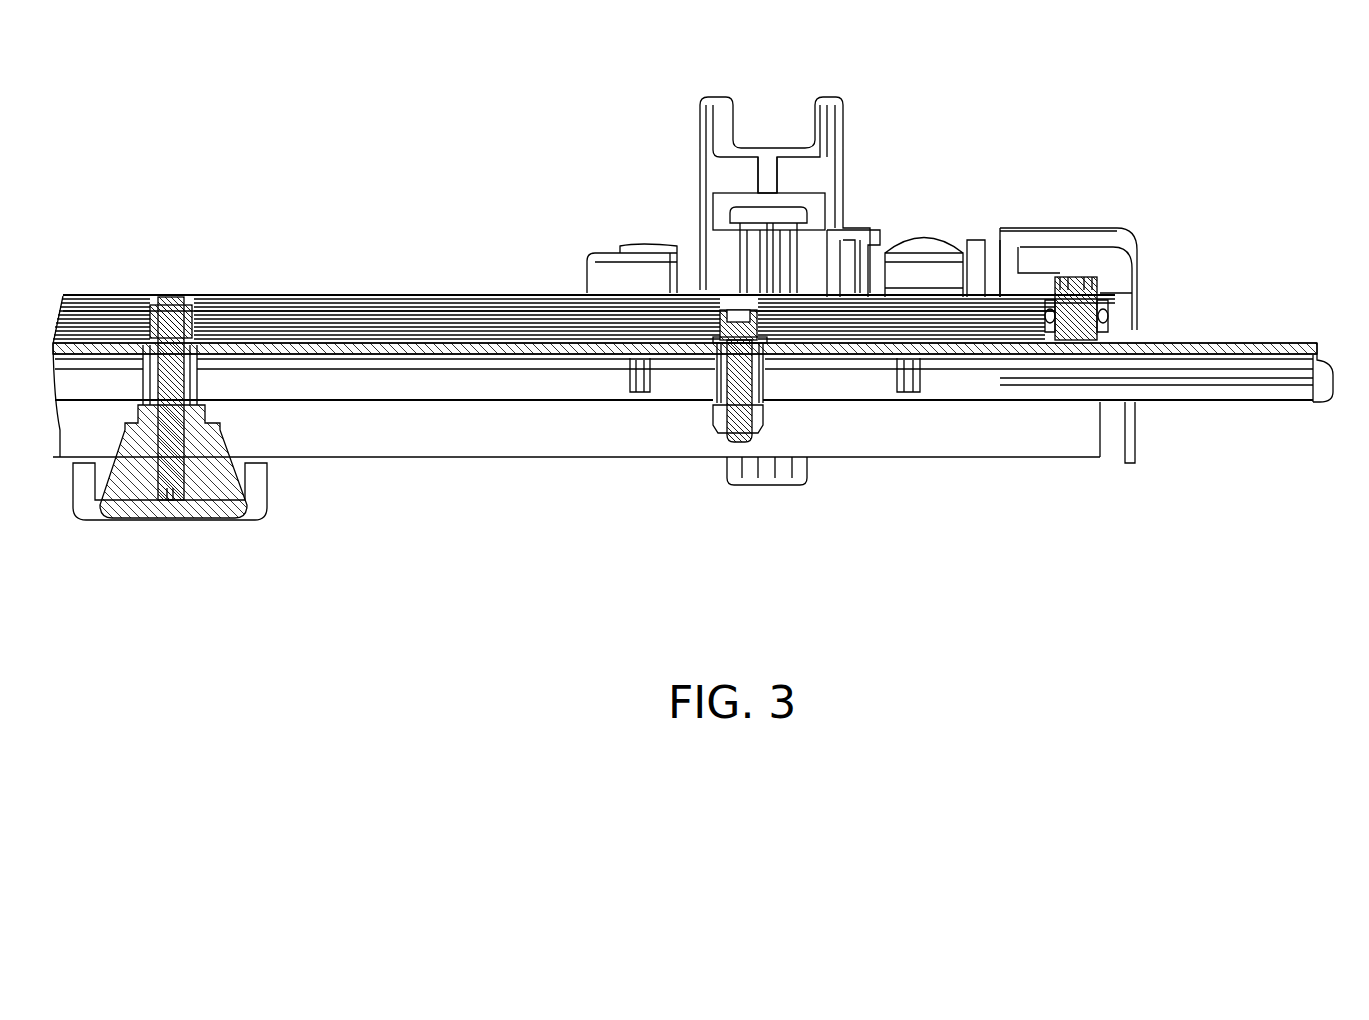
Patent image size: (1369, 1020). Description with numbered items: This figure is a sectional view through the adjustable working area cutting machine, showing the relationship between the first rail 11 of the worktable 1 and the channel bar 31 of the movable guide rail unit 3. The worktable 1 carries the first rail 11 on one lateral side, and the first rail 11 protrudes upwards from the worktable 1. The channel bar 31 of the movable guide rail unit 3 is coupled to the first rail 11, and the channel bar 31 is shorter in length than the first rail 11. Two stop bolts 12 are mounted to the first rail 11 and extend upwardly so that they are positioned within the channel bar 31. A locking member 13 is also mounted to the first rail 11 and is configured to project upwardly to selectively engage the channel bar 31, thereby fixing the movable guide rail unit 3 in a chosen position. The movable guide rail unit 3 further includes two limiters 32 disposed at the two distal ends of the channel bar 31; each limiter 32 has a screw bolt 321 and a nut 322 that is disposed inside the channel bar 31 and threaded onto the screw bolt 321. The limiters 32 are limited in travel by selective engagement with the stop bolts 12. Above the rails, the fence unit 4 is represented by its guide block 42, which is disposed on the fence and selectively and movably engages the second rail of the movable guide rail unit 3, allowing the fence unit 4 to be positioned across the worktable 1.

The worktable 1 is at (1186, 430).
The first rail 11 is at (1215, 346).
The stop bolts 12 is at (735, 435).
The locking member 13 is at (222, 512).
The movable guide rail unit 3 is at (430, 280).
The channel bar 31 is at (510, 333).
The limiters 32 is at (1100, 275).
The screw bolt 321 is at (1080, 295).
The nut 322 is at (1106, 330).
The fence unit 4 is at (853, 152).
The guide block 42 is at (796, 185).